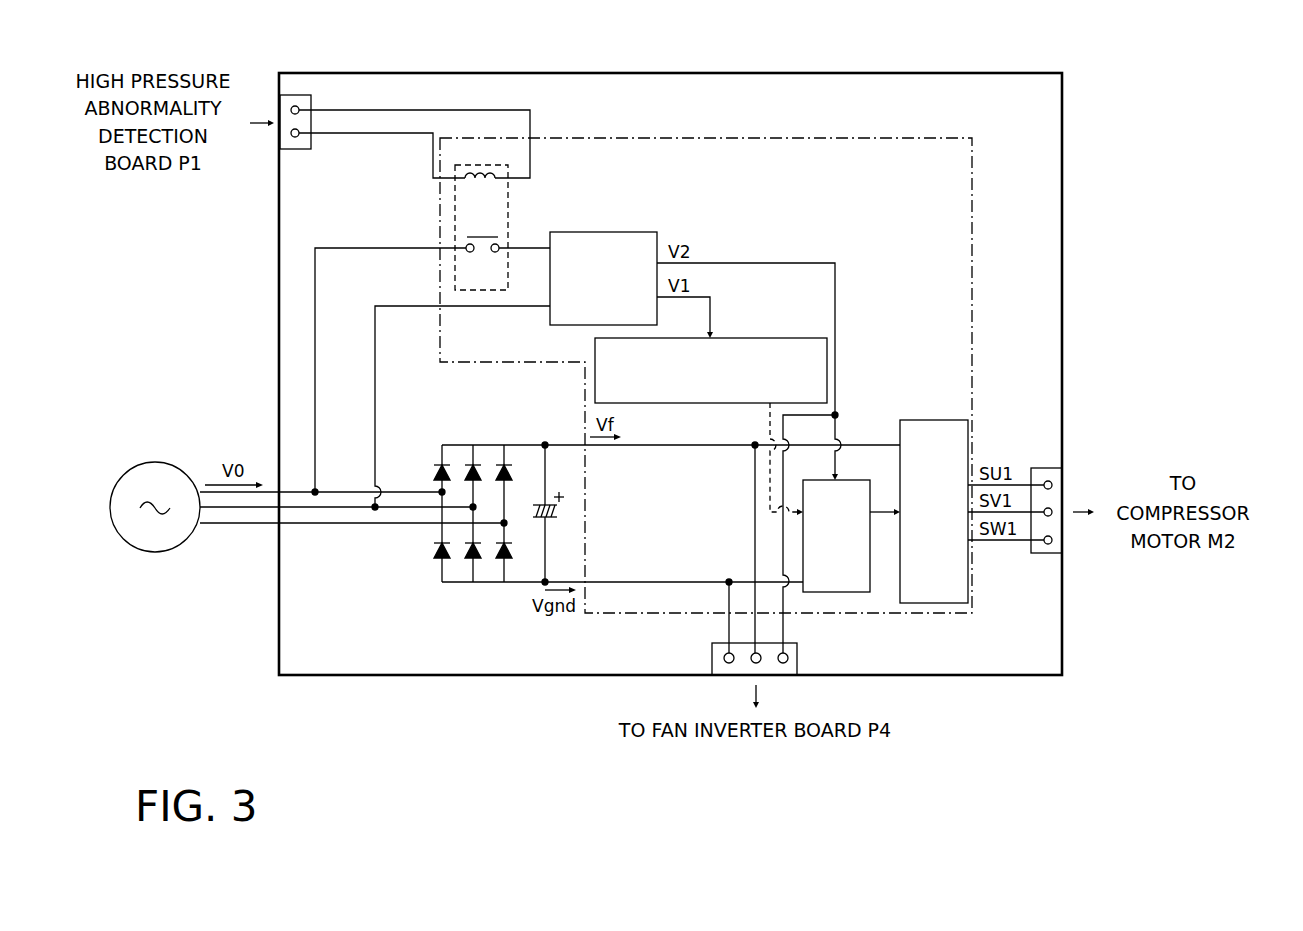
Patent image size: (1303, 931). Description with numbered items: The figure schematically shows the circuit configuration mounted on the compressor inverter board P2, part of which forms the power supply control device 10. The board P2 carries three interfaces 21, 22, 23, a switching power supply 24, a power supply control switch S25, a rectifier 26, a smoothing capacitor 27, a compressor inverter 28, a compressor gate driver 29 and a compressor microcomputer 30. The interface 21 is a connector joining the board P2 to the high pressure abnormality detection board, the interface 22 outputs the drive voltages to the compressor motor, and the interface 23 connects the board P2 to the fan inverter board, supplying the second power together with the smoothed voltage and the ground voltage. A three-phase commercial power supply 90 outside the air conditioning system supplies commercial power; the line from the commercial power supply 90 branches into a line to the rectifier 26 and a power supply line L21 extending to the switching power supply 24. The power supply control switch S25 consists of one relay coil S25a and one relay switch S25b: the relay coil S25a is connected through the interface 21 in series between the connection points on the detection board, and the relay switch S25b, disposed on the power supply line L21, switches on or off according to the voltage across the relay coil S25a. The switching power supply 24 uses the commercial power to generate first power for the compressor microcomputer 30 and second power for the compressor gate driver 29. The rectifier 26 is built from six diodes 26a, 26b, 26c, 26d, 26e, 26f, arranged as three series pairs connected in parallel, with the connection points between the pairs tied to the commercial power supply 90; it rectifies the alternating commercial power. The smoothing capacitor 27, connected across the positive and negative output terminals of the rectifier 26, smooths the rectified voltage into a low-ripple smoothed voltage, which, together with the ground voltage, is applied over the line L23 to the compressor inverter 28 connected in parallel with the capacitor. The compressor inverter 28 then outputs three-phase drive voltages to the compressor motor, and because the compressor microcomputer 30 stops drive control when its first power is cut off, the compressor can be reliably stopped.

The compressor inverter board P2 is at (787, 72).
The interface 21 is at (303, 150).
The power supply control device 10 is at (770, 138).
The power supply control switch S25 is at (518, 228).
The relay coil S25a is at (485, 187).
The relay switch S25b is at (494, 256).
The power supply line L21 is at (350, 252).
The switching power supply 24 is at (640, 231).
The compressor microcomputer 30 is at (808, 340).
The line L23 is at (610, 452).
The compressor gate driver 29 is at (850, 484).
The compressor inverter 28 is at (928, 420).
The interface 22 is at (1040, 467).
The interface 23 is at (790, 643).
The commercial power supply 90 is at (157, 480).
The rectifier 26 is at (468, 499).
The diode 26a is at (437, 472).
The diode 26b is at (437, 560).
The diode 26c is at (468, 462).
The diode 26d is at (470, 562).
The diode 26e is at (506, 462).
The diode 26f is at (508, 562).
The smoothing capacitor 27 is at (553, 524).